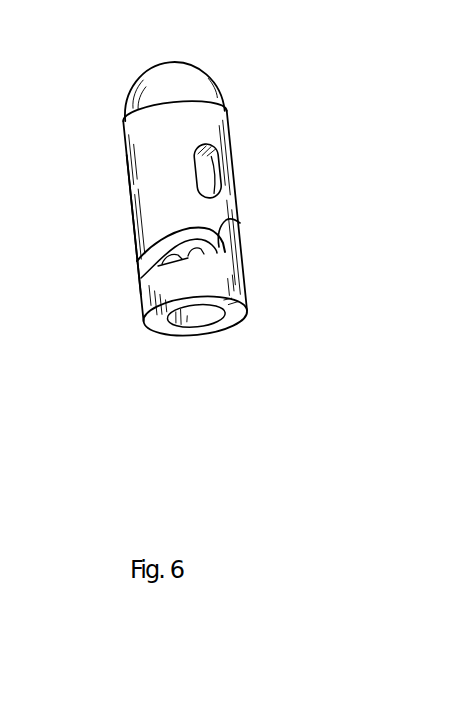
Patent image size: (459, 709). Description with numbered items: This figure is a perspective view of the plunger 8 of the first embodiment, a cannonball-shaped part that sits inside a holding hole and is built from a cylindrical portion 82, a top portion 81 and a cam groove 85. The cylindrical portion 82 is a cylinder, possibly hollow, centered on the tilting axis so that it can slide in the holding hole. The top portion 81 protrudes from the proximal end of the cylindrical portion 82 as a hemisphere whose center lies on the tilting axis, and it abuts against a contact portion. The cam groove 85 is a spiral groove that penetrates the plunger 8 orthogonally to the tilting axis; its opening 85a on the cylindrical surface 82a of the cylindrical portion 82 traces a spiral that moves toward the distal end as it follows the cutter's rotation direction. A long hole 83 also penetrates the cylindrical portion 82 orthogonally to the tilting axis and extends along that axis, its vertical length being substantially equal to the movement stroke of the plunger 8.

The plunger 8 is at (245, 65).
The top portion 81 is at (140, 74).
The cylindrical portion 82 is at (128, 185).
The cylindrical surface 82a is at (131, 222).
The long hole 83 is at (216, 162).
The cam groove 85 is at (238, 222).
The opening 85a is at (205, 252).